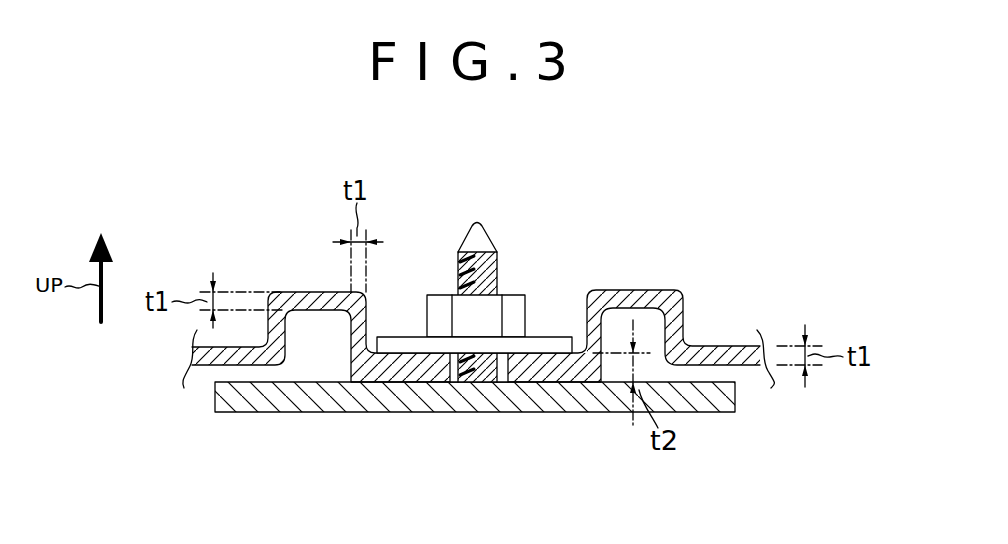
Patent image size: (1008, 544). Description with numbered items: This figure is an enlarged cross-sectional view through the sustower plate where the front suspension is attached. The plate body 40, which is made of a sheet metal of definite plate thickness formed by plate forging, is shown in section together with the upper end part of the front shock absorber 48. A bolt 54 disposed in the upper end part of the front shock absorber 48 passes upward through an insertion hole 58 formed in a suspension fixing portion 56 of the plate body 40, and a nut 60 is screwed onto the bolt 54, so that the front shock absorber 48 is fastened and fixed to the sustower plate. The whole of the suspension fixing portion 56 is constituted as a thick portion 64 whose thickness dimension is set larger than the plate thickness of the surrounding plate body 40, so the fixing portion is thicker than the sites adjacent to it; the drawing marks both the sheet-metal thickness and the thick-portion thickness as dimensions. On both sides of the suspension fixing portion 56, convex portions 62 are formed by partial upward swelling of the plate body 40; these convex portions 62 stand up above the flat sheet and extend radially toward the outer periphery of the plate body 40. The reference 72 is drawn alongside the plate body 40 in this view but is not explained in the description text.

The plate body 40 is at (492, 353).
The bracket member (alternate) 72 is at (492, 353).
The front shock absorber 48 is at (283, 413).
The bolt 54 is at (462, 250).
The suspension fixing portion 56 is at (476, 423).
The thick portion 64 is at (418, 378).
The insertion hole 58 is at (497, 371).
The nut 60 is at (511, 292).
The convex portion 62 is at (312, 292).